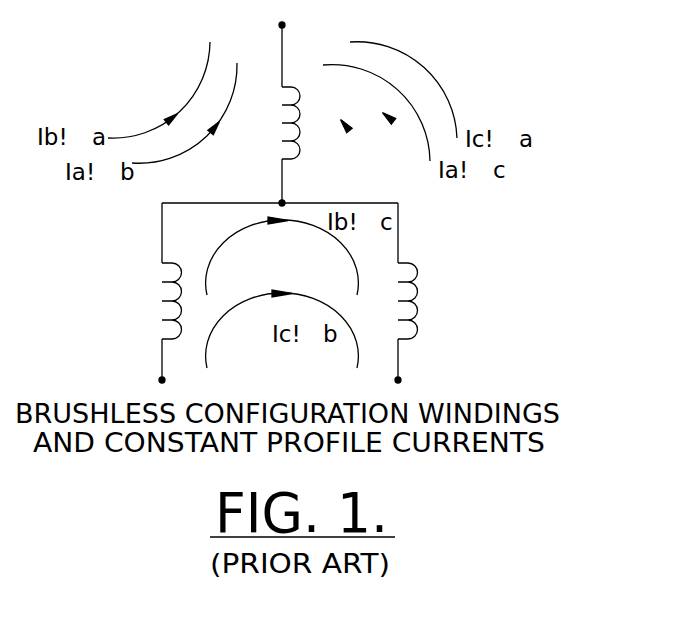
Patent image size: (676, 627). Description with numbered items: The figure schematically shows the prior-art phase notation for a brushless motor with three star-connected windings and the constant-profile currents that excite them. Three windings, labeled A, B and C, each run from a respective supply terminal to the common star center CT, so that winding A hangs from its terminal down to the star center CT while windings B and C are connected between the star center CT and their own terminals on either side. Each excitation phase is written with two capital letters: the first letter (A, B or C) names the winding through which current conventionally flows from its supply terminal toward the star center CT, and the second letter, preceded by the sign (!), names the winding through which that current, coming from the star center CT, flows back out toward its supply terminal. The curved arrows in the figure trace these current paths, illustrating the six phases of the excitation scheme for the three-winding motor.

The winding A is at (293, 112).
The winding B is at (172, 299).
The winding C is at (410, 299).
The star center CT is at (300, 185).